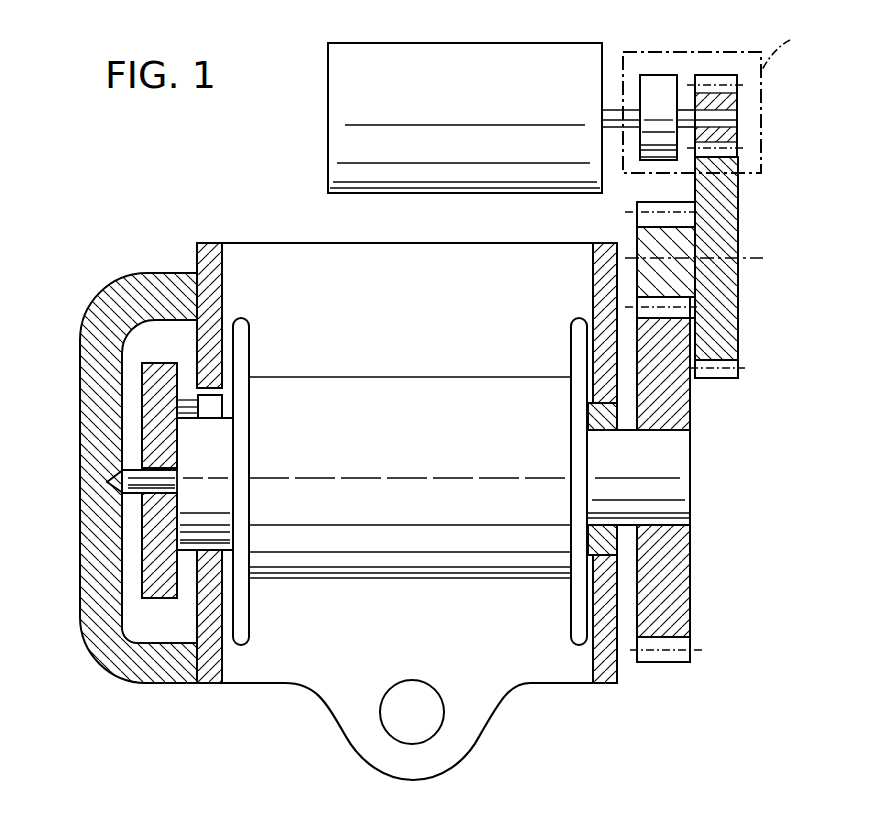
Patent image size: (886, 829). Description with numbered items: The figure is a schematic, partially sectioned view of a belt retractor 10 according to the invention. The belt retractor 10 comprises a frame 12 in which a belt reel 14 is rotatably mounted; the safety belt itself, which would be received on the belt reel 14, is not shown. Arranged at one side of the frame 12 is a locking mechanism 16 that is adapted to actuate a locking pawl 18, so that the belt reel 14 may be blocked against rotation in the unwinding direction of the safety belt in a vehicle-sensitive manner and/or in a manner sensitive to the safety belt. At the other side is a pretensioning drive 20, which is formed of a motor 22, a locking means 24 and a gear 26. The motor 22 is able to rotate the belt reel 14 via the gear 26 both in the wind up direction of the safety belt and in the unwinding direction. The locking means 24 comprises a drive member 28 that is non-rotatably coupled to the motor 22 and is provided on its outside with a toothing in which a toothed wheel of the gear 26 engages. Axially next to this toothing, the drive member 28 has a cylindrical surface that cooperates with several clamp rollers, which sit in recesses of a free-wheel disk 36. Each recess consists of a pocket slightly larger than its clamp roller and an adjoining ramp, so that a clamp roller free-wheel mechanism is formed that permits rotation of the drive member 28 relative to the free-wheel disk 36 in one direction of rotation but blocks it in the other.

The belt retractor 10 is at (87, 648).
The frame 12 is at (249, 667).
The belt reel 14 is at (487, 560).
The locking mechanism 16 is at (152, 544).
The locking pawl 18 is at (204, 404).
The pretensioning drive 20 is at (767, 143).
The motor 22 is at (450, 63).
The locking means 24 is at (712, 72).
The gear 26 is at (745, 352).
The drive member 28 is at (738, 97).
The free-wheel disk 36 is at (658, 87).